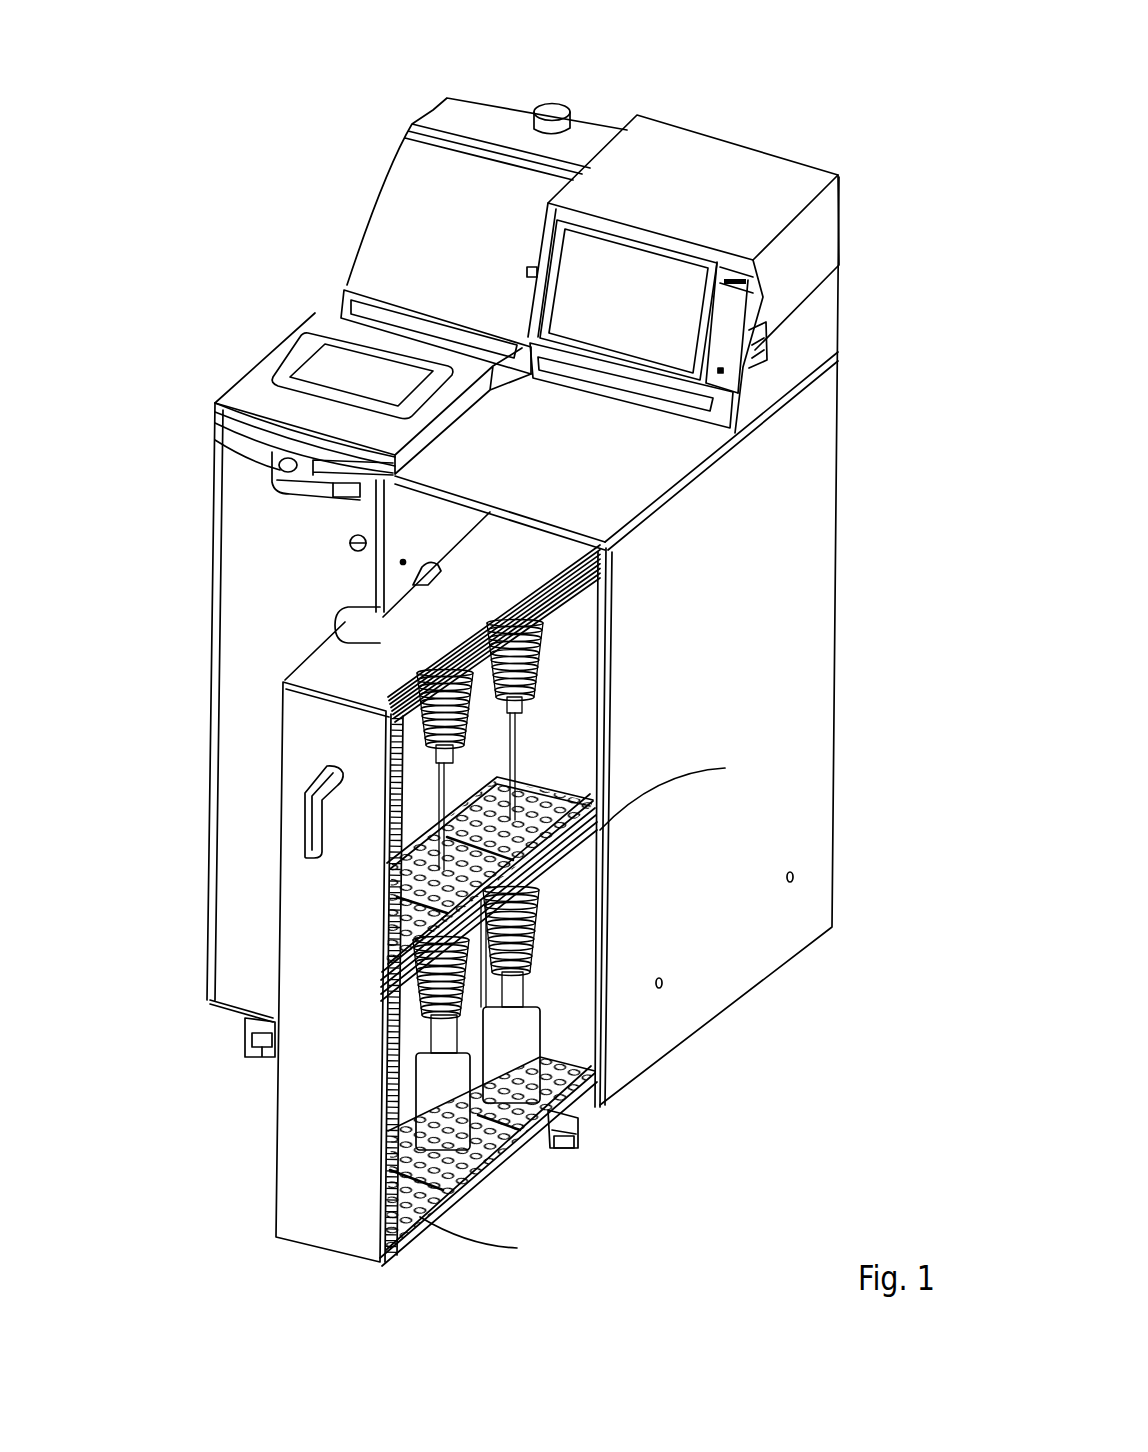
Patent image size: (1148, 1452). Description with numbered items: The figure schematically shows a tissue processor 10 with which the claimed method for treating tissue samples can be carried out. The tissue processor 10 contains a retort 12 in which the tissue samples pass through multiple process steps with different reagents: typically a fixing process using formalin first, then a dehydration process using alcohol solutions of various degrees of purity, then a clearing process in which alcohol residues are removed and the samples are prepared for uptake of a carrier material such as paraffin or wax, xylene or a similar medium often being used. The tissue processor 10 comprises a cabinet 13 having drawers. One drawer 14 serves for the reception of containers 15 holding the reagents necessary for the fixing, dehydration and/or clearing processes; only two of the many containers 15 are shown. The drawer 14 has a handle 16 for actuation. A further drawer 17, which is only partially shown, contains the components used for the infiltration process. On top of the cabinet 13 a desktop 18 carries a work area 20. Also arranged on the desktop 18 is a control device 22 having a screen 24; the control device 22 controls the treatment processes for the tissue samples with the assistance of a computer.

The tissue processor 10 is at (768, 78).
The retort 12 is at (341, 363).
The cabinet 13 is at (886, 508).
The drawer 14 is at (250, 972).
The containers 15 is at (517, 1057).
The handle 16 is at (303, 818).
The further drawer 17 is at (401, 562).
The desktop 18 is at (695, 482).
The work area 20 is at (579, 473).
The control device 22 is at (813, 228).
The screen 24 is at (630, 277).